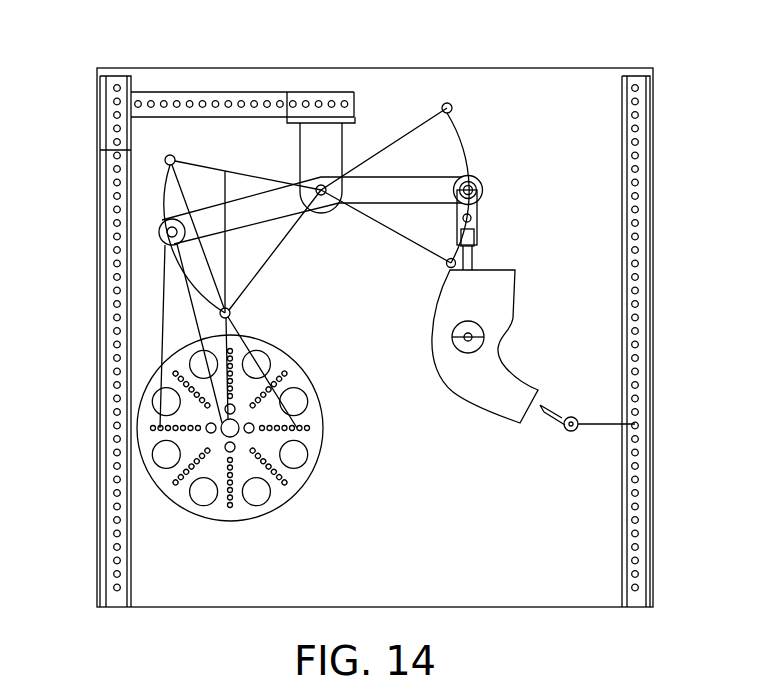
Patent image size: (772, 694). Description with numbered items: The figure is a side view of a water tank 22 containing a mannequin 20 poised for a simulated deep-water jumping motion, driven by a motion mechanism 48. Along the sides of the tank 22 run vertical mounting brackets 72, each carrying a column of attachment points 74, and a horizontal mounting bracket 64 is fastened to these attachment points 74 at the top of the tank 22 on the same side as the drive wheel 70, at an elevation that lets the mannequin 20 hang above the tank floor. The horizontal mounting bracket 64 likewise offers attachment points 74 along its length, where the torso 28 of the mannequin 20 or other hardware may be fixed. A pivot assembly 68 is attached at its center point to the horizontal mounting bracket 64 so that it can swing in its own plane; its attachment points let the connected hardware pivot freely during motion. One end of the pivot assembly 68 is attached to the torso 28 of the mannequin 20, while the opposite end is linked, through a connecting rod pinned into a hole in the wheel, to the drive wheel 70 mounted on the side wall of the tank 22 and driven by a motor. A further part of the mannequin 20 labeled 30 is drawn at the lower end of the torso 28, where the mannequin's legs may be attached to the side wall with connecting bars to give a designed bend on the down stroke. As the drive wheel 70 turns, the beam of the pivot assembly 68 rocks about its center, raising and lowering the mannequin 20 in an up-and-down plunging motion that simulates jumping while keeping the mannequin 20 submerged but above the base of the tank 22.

The mannequin 20 is at (528, 294).
The tank 22 is at (655, 168).
The torso 28 is at (441, 293).
The follower pin 30 is at (492, 412).
The motion mechanism 48 is at (370, 87).
The horizontal mounting bracket 64 is at (258, 86).
The pivot assembly 68 is at (278, 214).
The drive wheels 70 is at (306, 370).
The vertical mounting brackets 72 is at (128, 552).
The attachment points 74 is at (186, 101).